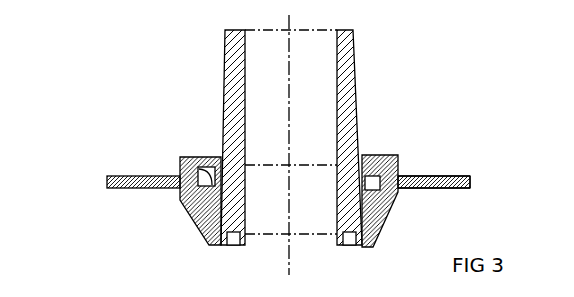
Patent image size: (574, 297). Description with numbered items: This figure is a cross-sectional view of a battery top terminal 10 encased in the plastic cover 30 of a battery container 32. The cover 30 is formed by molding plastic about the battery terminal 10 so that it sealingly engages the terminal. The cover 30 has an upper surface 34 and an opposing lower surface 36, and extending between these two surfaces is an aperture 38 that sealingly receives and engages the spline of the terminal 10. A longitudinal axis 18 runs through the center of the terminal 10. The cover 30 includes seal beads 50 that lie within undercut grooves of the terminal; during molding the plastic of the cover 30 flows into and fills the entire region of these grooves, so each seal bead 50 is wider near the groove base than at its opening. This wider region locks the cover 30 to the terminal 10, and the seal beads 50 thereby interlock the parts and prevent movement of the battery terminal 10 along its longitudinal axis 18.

The top terminal 10 is at (386, 70).
The longitudinal axis 18 is at (298, 276).
The plastic cover 30 is at (455, 174).
The battery container 32 is at (476, 213).
The upper surface 34 is at (418, 174).
The lower surface 36 is at (422, 188).
The aperture 38 is at (238, 256).
The seal bead 50 is at (206, 178).